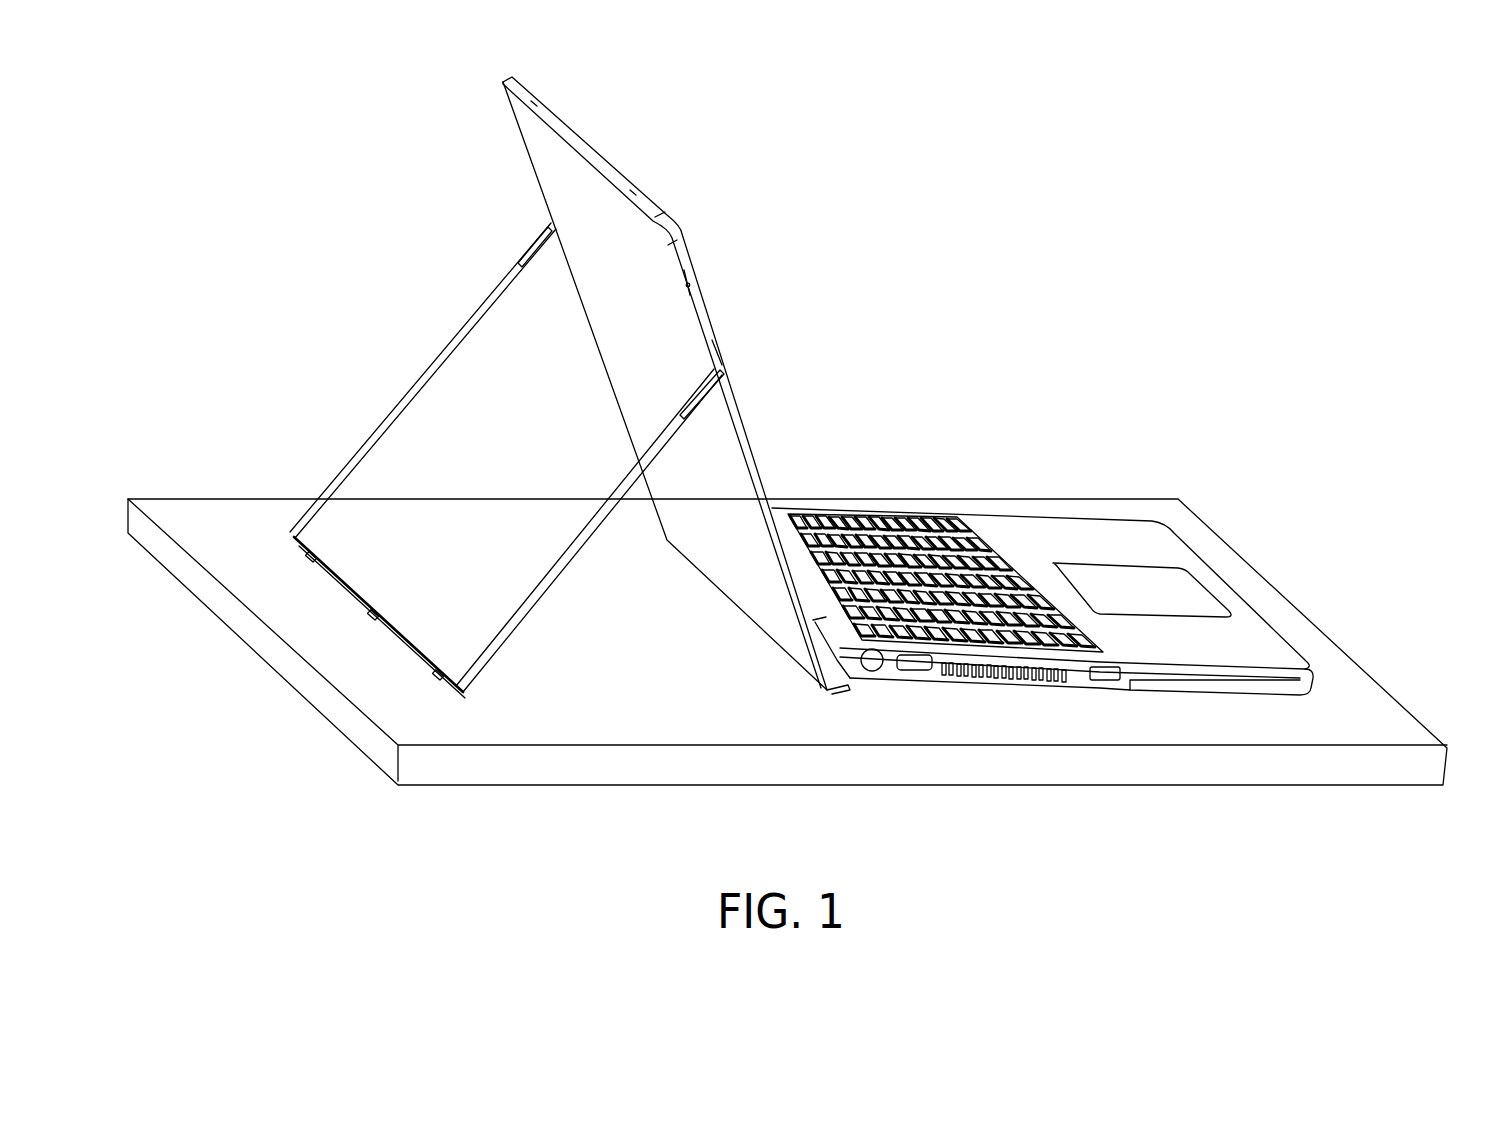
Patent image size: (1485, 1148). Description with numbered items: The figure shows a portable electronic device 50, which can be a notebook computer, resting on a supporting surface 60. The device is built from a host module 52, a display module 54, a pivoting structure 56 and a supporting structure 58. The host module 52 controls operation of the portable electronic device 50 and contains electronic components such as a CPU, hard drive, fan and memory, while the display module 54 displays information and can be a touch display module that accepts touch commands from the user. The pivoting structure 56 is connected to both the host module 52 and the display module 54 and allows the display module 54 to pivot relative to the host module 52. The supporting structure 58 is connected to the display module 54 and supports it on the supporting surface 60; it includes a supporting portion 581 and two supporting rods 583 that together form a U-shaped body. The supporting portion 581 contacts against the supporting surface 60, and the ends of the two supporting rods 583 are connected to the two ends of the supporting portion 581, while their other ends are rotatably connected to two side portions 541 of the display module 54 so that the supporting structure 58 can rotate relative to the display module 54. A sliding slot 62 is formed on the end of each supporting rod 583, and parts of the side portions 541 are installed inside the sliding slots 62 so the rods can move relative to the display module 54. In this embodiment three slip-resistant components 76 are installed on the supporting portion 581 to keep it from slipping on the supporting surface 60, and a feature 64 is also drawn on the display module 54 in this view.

The portable electronic device 50 is at (1150, 158).
The host module 52 is at (1103, 528).
The display module 54 is at (676, 385).
The side portion 541 is at (742, 432).
The pivoting structure 56 is at (830, 613).
The supporting structure 58 is at (469, 561).
The supporting portion 581 is at (410, 637).
The supporting rod 583 is at (430, 376).
The supporting surface 60 is at (223, 505).
The sliding slot 62 is at (533, 250).
The button 64 is at (684, 270).
The slip-resistant component 76 is at (330, 698).